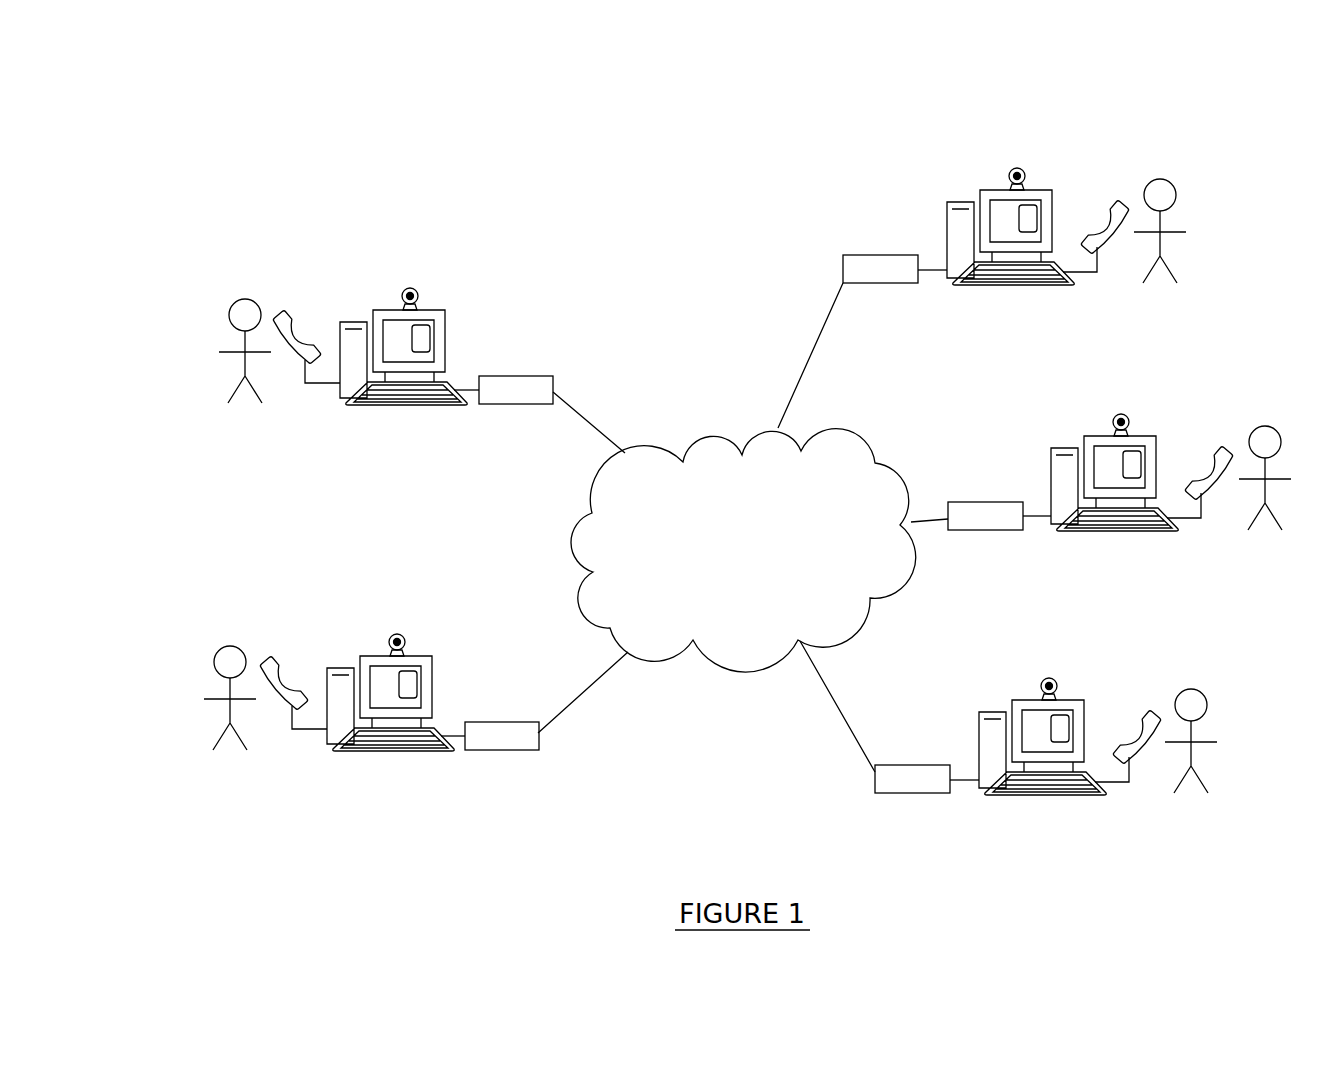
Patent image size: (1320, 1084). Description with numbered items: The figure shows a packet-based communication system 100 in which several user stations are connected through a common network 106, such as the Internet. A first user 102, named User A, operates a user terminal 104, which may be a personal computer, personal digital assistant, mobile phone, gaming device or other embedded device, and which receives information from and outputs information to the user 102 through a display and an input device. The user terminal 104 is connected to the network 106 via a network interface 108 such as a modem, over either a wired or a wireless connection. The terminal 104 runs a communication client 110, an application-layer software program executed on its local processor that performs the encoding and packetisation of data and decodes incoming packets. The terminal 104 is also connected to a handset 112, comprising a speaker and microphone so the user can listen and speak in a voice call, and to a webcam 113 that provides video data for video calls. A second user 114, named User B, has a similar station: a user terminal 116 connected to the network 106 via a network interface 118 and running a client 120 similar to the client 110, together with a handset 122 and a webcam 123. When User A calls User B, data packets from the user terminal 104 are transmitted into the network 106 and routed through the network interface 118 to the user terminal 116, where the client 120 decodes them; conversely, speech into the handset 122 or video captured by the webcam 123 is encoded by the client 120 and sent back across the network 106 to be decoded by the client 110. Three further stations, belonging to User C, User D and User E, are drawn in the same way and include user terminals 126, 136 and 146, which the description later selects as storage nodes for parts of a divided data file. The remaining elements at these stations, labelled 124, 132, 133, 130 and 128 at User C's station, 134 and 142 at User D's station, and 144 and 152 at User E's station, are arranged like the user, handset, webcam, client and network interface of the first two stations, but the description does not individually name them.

The packet-based communication system 100 is at (366, 166).
The first user 102 is at (1265, 426).
The user terminal 104 is at (1093, 436).
The network 106 is at (555, 542).
The network interface 108 is at (985, 502).
The communication client 110 is at (1130, 449).
The handset 112 is at (1215, 452).
The webcam 113 is at (1126, 412).
The second user 114 is at (230, 646).
The user terminal 116 is at (372, 656).
The network interface 118 is at (500, 722).
The client 120 is at (400, 670).
The handset 122 is at (277, 665).
The webcam 123 is at (398, 634).
The User C 124 is at (245, 299).
The user terminal 126 is at (386, 309).
The network interface of User C 128 is at (515, 377).
The display window of User C 130 is at (414, 325).
The telephone handset of User C 132 is at (291, 318).
The camera of User C 133 is at (412, 288).
The User D 134 is at (1160, 179).
The user terminal 136 is at (992, 189).
The display window of User D 142 is at (1028, 204).
The User E 144 is at (1191, 689).
The user terminal 146 is at (1022, 699).
The display window of User E 152 is at (1058, 714).